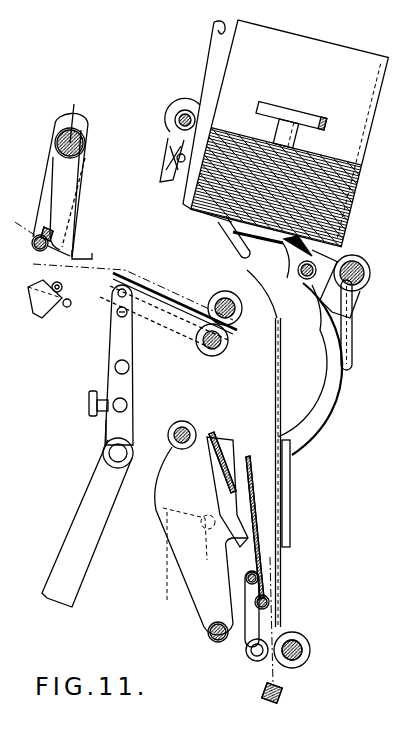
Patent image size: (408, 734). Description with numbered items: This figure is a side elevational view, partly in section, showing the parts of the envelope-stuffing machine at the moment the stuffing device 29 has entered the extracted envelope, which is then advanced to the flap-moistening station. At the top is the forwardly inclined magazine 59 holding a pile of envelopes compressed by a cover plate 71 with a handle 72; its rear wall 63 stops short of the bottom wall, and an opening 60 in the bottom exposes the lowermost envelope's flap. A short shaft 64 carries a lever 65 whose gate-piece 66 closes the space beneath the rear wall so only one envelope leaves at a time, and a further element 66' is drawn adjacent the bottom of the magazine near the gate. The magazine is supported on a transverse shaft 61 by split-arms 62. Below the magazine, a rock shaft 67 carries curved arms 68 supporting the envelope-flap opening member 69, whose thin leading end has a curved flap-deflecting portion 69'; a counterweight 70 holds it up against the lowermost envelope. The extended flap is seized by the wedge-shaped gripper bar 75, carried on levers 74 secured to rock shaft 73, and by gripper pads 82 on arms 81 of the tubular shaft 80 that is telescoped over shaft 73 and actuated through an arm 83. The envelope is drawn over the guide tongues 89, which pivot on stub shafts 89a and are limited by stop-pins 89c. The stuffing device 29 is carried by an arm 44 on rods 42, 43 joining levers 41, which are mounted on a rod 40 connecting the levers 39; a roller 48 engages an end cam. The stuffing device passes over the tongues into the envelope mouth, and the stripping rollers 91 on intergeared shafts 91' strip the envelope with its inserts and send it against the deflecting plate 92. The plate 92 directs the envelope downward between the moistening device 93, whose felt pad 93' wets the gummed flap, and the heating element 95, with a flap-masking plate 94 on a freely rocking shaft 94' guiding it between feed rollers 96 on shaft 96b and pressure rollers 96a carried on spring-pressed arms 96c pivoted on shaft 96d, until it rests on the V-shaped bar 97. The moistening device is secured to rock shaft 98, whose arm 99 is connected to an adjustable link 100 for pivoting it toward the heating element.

The magazine 59 is at (323, 56).
The cover plate 71 is at (330, 163).
The handle 72 is at (302, 112).
The rear wall 63 is at (213, 30).
The transverse shaft 64 is at (186, 111).
The lever 65 is at (168, 155).
The gate-piece 66 is at (164, 200).
The opening 60 is at (192, 210).
The finger 66' is at (219, 237).
The envelope-flap opening member 69 is at (272, 249).
The curved flap-deflecting portion 69' is at (252, 261).
The curved arms 68 is at (304, 280).
The transverse shaft 61 is at (360, 266).
The split-arms 62 is at (353, 305).
The counterweight 70 is at (353, 350).
The deflecting plate 92 is at (282, 348).
The heating element 95 is at (291, 524).
The levers 74 is at (47, 185).
The tubular shaft 80 is at (84, 136).
The transverse rock shaft 73 is at (78, 110).
The arms 81 is at (65, 180).
The arm 83 is at (79, 208).
The gripper pads 82 is at (43, 226).
The gripper bar 75 is at (32, 244).
The stuffing device 29 is at (132, 283).
The stub shafts 89a is at (43, 280).
The guide tongues 89 is at (93, 288).
The stop-pins 89c is at (67, 307).
The arm 44 is at (118, 340).
The transverse rod 42 is at (129, 367).
The transverse rod 43 is at (126, 403).
The roller 48 is at (91, 417).
The levers 41 is at (125, 428).
The transverse rod 40 is at (128, 453).
The levers 39 is at (85, 510).
The transverse shafts 91' is at (211, 324).
The stripping rollers 91 is at (229, 340).
The transverse rock shaft 67 is at (184, 421).
The moistening device 93 is at (225, 492).
The felt pad 93' is at (226, 451).
The flap-masking plate 94 is at (253, 509).
The transverse shaft 94' is at (288, 593).
The transverse shaft 96d is at (257, 577).
The spring-pressed arms 96c is at (250, 627).
The pressure rollers 96a is at (252, 657).
The feed rollers 96 is at (310, 648).
The feed-roller shaft 96b is at (298, 643).
The V-shaped bar 97 is at (285, 690).
The transverse rock shaft 98 is at (208, 632).
The arm 99 is at (200, 567).
The adjustable link 100 is at (183, 520).